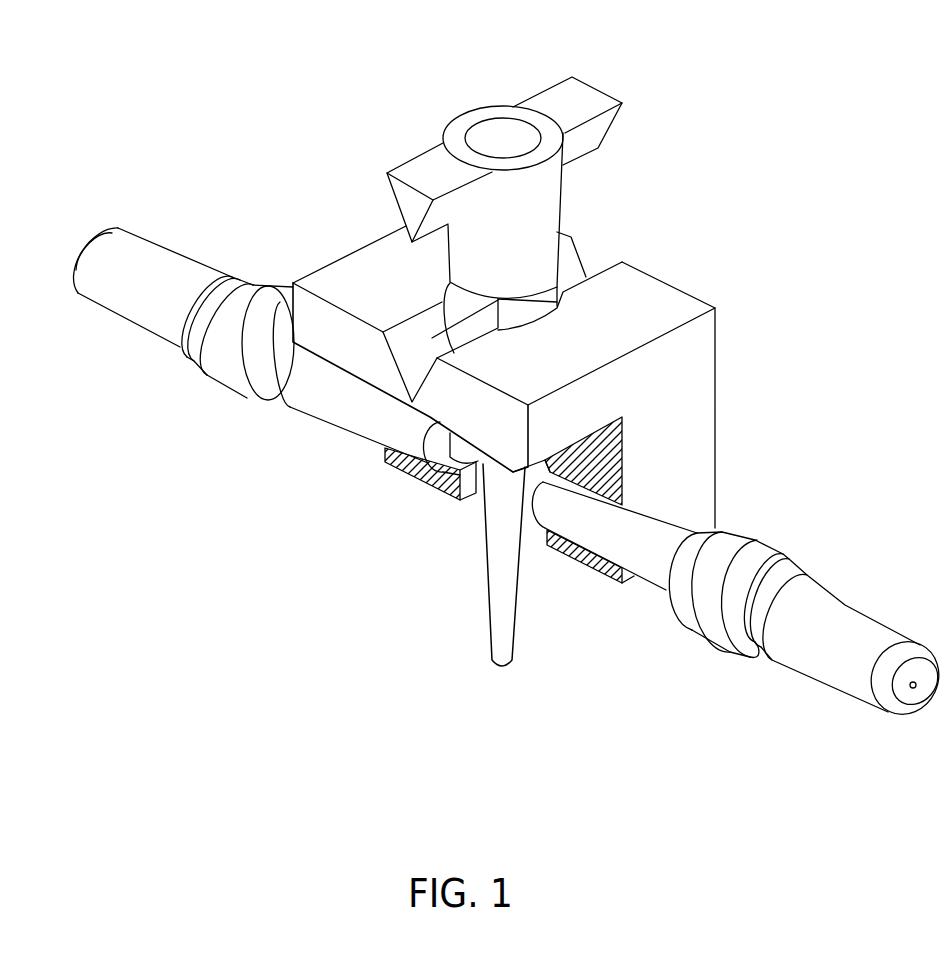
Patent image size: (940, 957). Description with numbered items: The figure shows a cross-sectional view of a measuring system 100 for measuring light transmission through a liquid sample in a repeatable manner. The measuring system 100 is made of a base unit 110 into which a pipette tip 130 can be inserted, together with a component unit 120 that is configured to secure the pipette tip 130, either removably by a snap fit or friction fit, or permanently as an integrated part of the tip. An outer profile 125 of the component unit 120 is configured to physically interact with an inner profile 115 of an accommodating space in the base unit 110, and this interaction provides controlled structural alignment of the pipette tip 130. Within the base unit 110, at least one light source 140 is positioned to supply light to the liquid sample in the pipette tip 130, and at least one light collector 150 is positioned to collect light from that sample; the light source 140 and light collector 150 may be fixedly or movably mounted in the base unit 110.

The measuring system 100 is at (286, 68).
The base unit 110 is at (680, 428).
The inner profile 115 is at (570, 257).
The component unit 120 is at (460, 203).
The outer profile 125 is at (397, 210).
The pipette tip 130 is at (503, 575).
The light source 140 is at (385, 425).
The light collector 150 is at (607, 522).